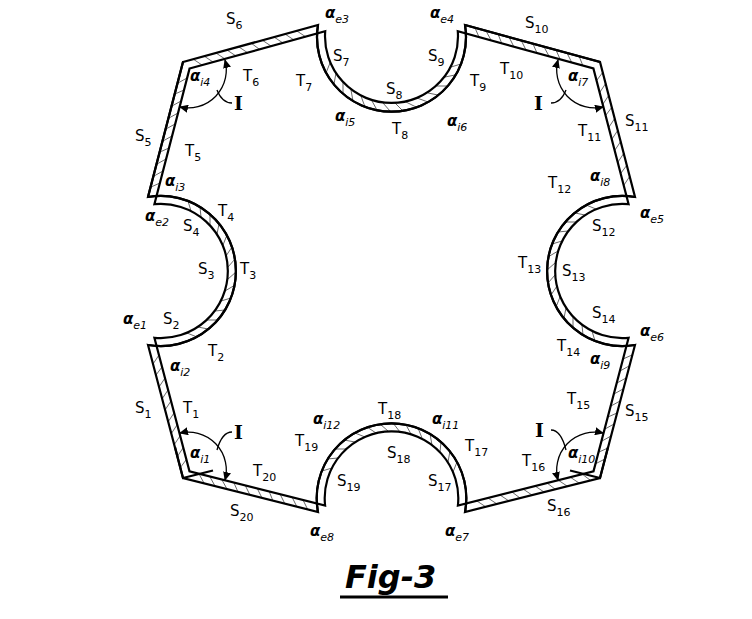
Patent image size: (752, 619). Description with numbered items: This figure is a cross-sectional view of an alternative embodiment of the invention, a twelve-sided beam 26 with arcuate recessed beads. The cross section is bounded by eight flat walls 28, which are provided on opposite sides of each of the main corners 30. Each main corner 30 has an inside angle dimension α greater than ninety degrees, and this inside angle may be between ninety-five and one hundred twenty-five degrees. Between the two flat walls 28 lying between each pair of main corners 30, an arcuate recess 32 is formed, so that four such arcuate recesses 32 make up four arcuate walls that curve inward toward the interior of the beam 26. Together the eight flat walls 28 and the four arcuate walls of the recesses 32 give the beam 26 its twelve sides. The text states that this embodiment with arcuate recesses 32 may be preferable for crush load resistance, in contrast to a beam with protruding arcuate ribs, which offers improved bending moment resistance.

The 12-sided beam 26 is at (126, 418).
The flat wall 28 is at (164, 118).
The main corner 30 is at (183, 478).
The arcuate recess 32 is at (356, 101).